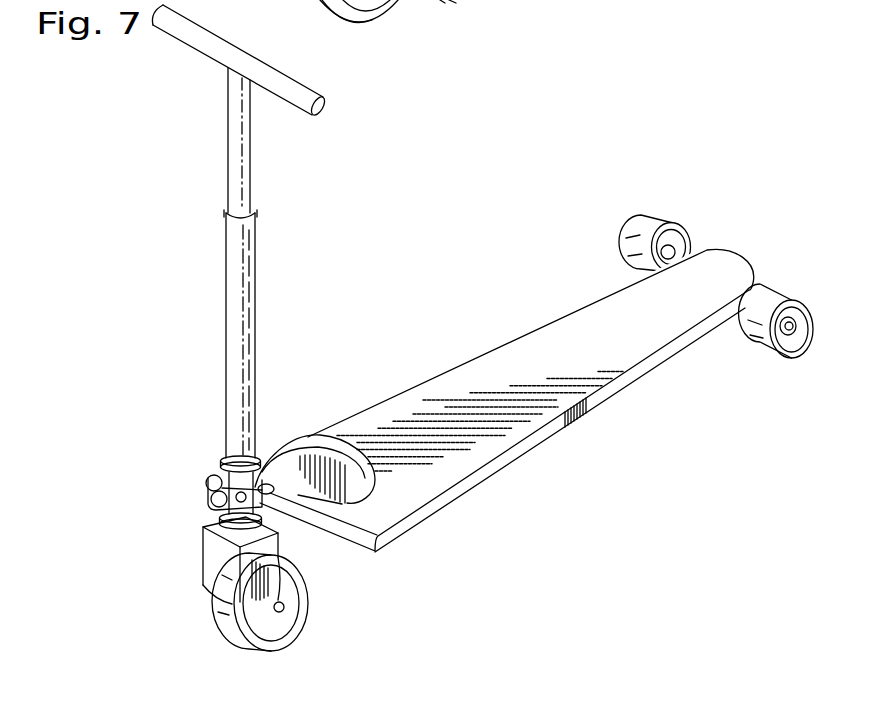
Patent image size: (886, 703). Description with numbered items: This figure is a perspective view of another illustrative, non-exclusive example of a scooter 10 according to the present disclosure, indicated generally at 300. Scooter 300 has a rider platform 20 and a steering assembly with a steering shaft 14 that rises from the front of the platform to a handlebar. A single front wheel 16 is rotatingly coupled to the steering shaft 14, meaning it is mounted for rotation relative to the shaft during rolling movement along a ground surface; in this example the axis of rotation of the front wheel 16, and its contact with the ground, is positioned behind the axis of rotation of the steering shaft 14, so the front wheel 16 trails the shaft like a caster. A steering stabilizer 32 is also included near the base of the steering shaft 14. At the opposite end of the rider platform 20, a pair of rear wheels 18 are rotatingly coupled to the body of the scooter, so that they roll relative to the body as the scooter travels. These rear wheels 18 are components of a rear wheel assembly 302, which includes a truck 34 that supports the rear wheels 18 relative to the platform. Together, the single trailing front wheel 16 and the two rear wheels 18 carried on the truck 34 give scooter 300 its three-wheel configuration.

The scooter 10 is at (705, 49).
The scooter 300 is at (659, 106).
The steering shaft 14 is at (255, 292).
The front wheel 16 is at (312, 582).
The rear wheels 18 is at (664, 228).
The rider platform 20 is at (620, 335).
The steering stabilizer 32 is at (214, 502).
The truck 34 is at (720, 269).
The rear wheel assembly 302 is at (727, 238).